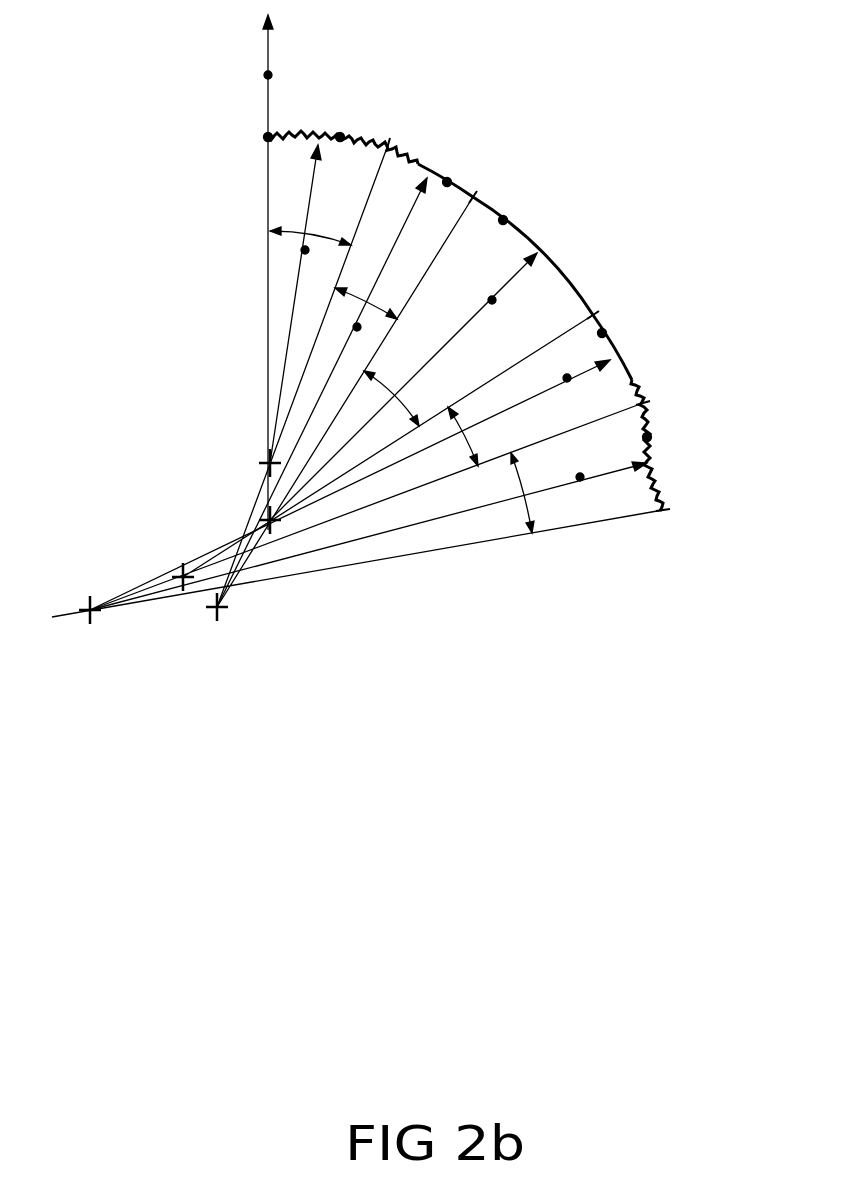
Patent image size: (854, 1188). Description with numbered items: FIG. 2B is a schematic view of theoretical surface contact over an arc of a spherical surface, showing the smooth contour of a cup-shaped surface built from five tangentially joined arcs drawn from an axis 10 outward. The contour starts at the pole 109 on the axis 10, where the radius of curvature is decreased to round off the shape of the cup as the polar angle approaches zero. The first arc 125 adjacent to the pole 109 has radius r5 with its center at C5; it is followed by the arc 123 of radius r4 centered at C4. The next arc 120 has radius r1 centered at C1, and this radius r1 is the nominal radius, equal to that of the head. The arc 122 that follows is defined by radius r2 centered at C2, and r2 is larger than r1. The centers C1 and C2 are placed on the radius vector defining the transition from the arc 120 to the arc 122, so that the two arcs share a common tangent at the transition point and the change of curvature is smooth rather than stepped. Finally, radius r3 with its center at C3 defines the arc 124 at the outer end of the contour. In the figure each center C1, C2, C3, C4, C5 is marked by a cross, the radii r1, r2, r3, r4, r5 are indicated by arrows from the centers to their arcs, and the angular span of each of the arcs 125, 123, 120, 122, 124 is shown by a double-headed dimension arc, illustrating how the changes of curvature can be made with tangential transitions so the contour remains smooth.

The axis of symmetry 10 is at (270, 75).
The pole 109 is at (268, 137).
The arc 125 is at (340, 137).
The arc 123 is at (447, 182).
The arc 120 is at (503, 220).
The arc 122 is at (602, 333).
The arc 124 is at (647, 437).
The radius r1 is at (492, 300).
The radius r2 is at (567, 378).
The radius r3 is at (650, 592).
The radius r4 is at (357, 327).
The radius r5 is at (305, 250).
The center C1 is at (268, 520).
The center C2 is at (180, 582).
The center C3 is at (90, 610).
The center C4 is at (217, 608).
The center C5 is at (268, 463).